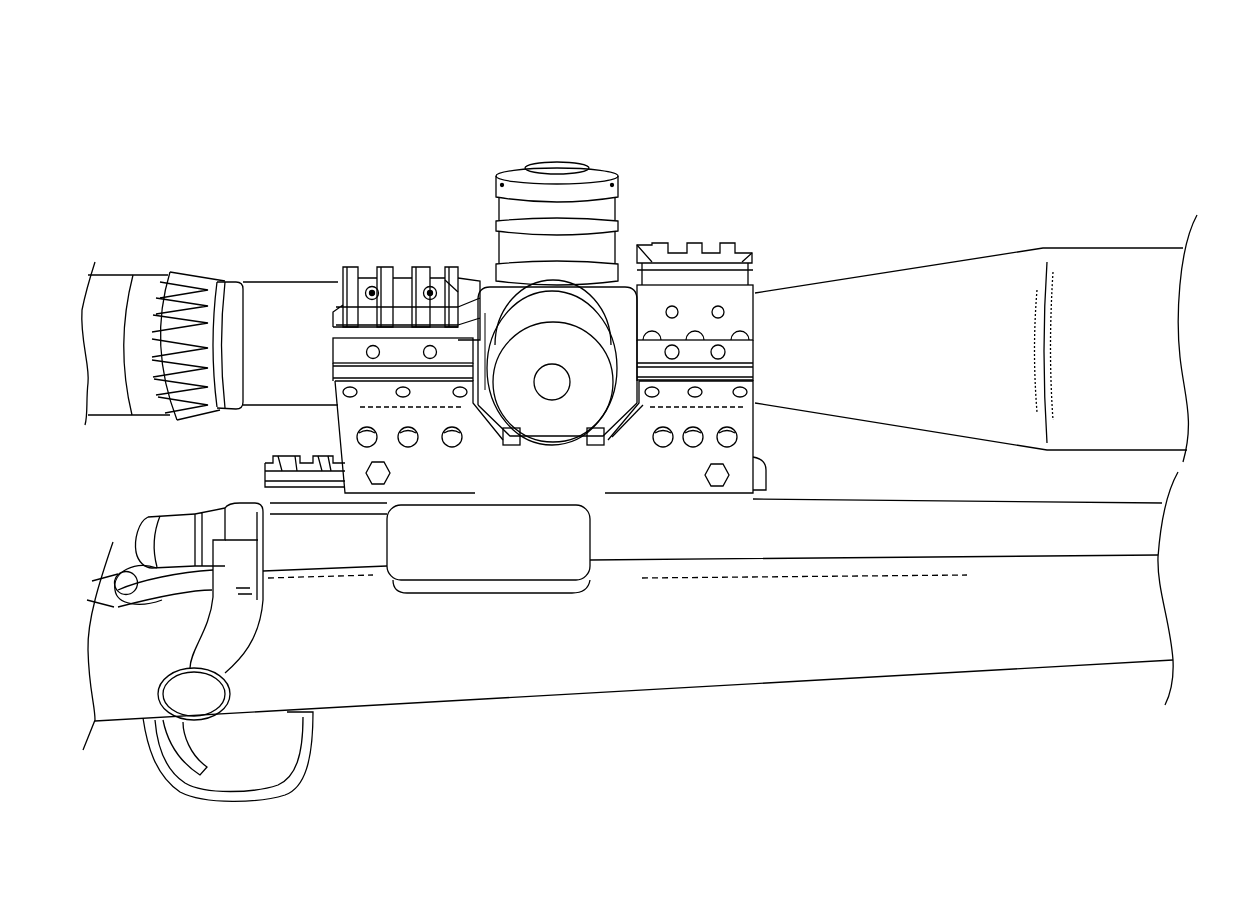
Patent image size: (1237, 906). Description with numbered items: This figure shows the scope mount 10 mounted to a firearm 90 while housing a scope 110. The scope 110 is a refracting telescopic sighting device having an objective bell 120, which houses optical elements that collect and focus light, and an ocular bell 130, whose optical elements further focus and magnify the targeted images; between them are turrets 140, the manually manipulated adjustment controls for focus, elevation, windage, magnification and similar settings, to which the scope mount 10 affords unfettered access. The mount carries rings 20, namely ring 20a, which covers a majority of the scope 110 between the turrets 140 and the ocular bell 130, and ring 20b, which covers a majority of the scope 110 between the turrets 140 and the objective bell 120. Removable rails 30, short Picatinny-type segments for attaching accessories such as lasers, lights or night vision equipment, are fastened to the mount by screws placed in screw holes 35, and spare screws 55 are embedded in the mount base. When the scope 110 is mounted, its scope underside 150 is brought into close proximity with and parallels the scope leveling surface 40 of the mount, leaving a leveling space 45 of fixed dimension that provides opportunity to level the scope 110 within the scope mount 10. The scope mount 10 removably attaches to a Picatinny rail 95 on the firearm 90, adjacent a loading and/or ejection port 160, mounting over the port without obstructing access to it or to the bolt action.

The scope mount 10 is at (794, 113).
The rings 20 is at (318, 264).
The ring 20a is at (367, 283).
The ring 20b is at (693, 305).
The removable rails 30 is at (405, 280).
The screw holes 35 is at (448, 277).
The scope leveling surface 40 is at (582, 447).
The leveling space 45 is at (510, 447).
The screws 55 is at (358, 448).
The firearm 90 is at (315, 652).
The Picatinny rail 95 is at (273, 462).
The scope 110 is at (847, 233).
The objective bell 120 is at (910, 366).
The ocular bell 130 is at (267, 351).
The turrets 140 is at (552, 150).
The scope underside 150 is at (616, 441).
The loading and/or ejection port 160 is at (443, 568).